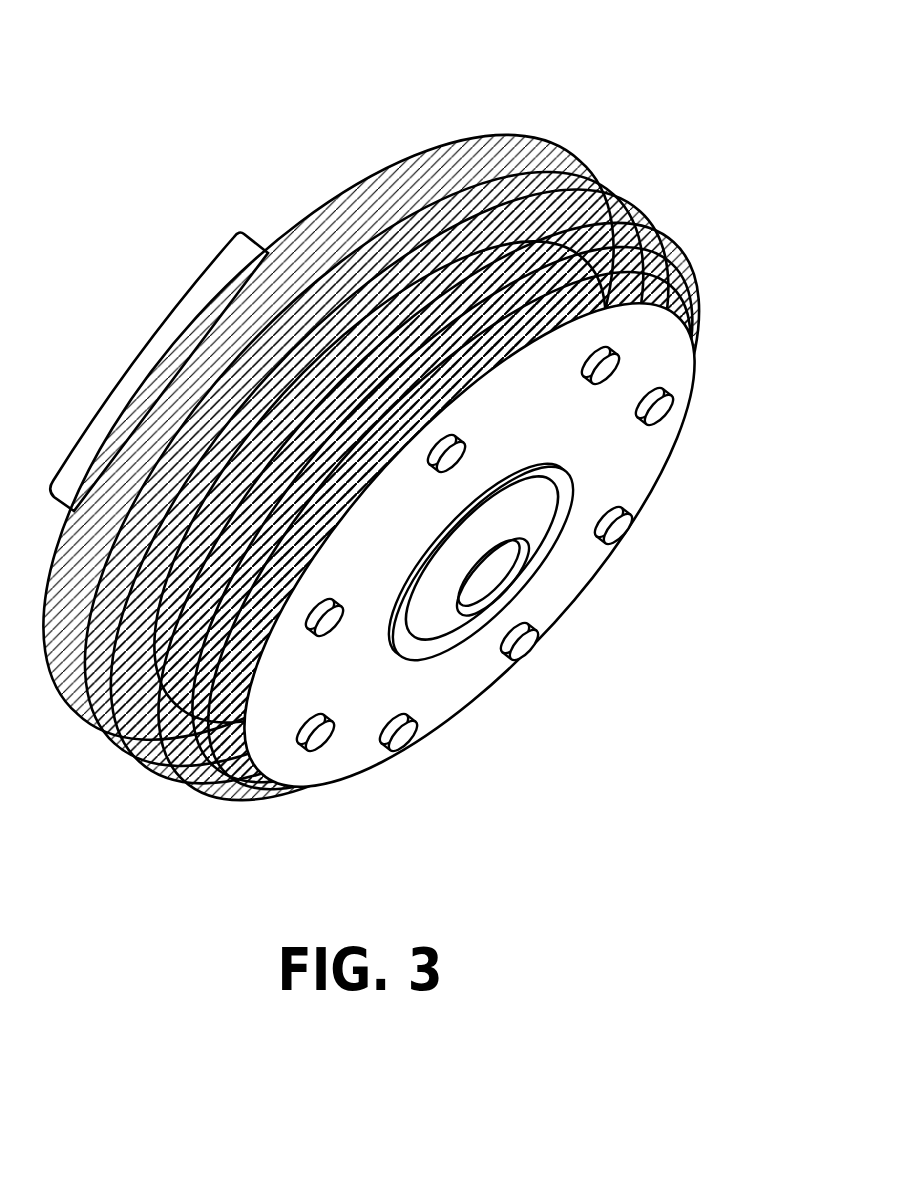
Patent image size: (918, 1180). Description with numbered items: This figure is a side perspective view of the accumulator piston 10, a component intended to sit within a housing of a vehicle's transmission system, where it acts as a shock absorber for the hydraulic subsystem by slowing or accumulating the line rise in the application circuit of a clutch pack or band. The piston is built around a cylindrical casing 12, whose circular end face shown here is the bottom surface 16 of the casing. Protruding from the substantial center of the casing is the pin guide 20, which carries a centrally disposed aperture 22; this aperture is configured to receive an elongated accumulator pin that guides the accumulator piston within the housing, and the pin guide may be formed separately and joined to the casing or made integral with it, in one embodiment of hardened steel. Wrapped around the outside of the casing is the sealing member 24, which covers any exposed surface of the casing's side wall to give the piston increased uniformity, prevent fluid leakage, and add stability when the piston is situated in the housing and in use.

The accumulator piston 10 is at (410, 416).
The cylindrical casing 12 is at (510, 537).
The bottom surface 16 is at (503, 412).
The pin guide 20 is at (507, 592).
The centrally disposed aperture 22 is at (498, 573).
The sealing member 24 is at (532, 163).